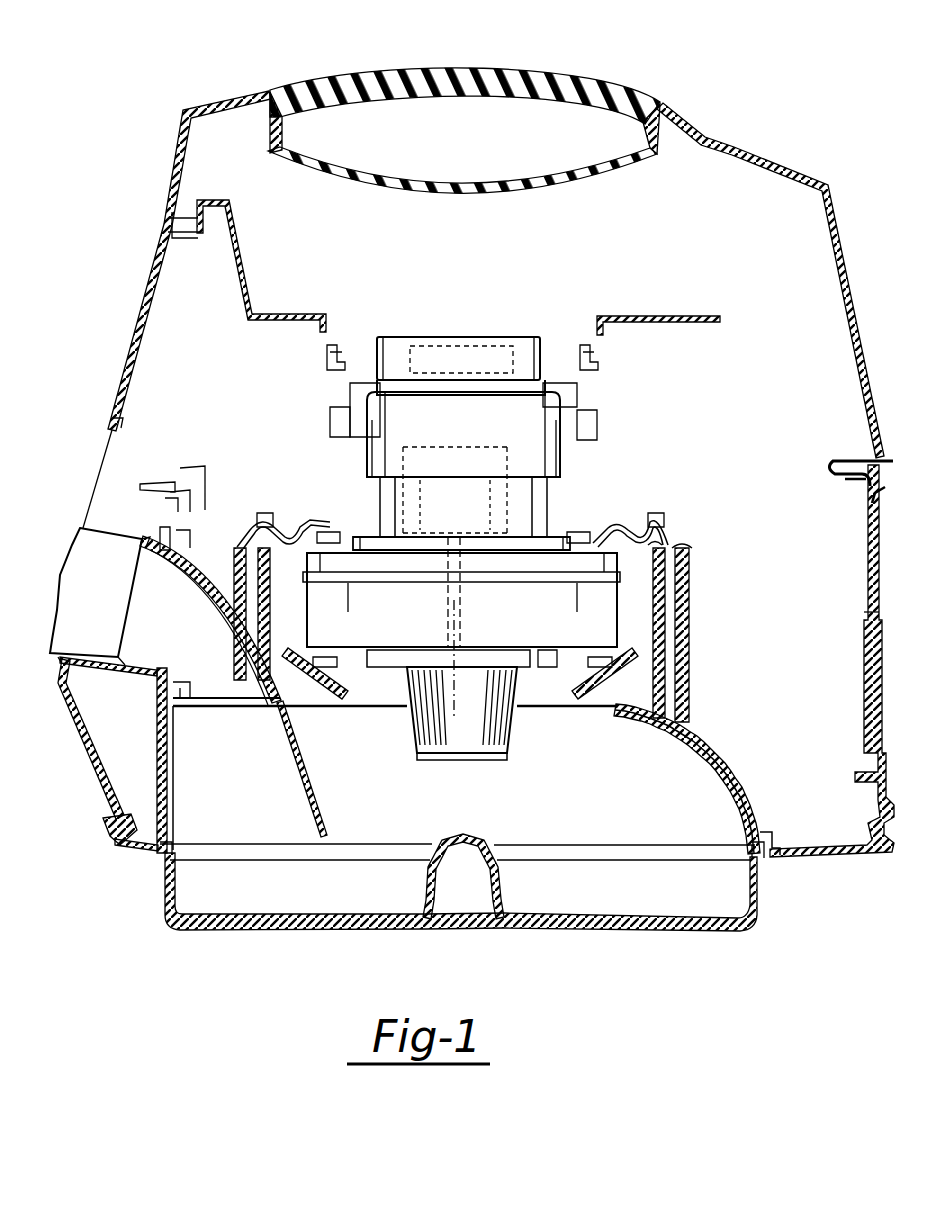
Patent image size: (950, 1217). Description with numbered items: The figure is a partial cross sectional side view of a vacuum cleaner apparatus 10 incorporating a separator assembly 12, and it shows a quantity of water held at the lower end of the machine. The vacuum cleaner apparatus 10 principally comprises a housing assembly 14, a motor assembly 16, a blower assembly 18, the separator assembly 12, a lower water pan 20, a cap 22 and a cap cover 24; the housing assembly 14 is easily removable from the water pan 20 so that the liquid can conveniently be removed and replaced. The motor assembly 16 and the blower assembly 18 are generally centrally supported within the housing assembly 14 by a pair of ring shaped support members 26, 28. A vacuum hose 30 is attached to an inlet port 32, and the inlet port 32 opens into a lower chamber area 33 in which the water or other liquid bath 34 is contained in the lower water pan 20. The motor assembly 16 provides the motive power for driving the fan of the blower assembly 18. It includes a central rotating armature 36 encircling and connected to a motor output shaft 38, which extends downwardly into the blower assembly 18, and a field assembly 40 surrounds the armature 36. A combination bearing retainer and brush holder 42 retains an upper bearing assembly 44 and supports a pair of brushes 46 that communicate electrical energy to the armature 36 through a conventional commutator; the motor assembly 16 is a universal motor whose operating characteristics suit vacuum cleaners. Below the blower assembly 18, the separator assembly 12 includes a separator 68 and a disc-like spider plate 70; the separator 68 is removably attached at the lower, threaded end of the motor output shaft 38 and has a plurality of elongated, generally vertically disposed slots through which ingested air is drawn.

The vacuum cleaner apparatus 10 is at (126, 92).
The separator assembly 12 is at (404, 721).
The housing assembly 14 is at (118, 343).
The motor assembly 16 is at (463, 446).
The blower assembly 18 is at (383, 628).
The lower water pan 20 is at (158, 912).
The cap 22 is at (238, 233).
The cap cover 24 is at (252, 92).
The ring shaped support member 26 is at (661, 547).
The ring shaped support member 28 is at (706, 722).
The vacuum hose 30 is at (66, 579).
The inlet port 32 is at (176, 572).
The lower chamber area 33 is at (400, 832).
The liquid bath 34 is at (625, 846).
The armature 36 is at (558, 541).
The motor output shaft 38 is at (466, 613).
The field assembly 40 is at (566, 478).
The combination bearing retainer and brush holder 42 is at (352, 390).
The upper bearing assembly 44 is at (405, 345).
The brushes 46 is at (343, 440).
The separator 68 is at (516, 736).
The spider plate 70 is at (542, 666).